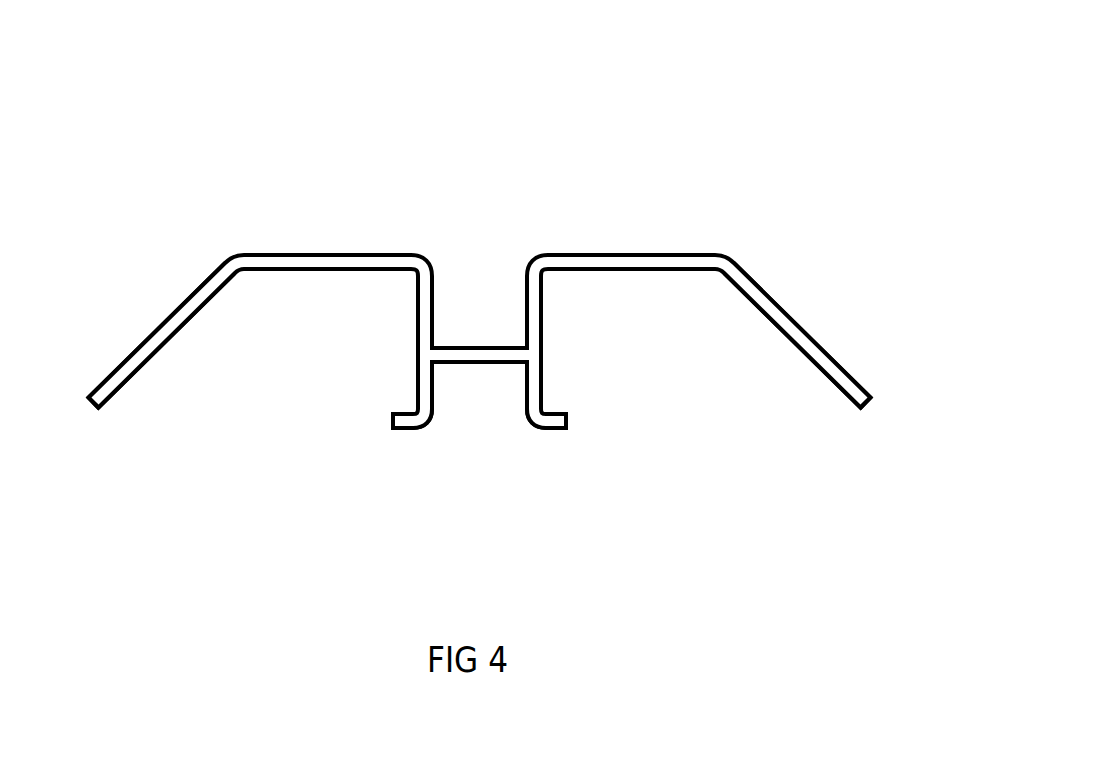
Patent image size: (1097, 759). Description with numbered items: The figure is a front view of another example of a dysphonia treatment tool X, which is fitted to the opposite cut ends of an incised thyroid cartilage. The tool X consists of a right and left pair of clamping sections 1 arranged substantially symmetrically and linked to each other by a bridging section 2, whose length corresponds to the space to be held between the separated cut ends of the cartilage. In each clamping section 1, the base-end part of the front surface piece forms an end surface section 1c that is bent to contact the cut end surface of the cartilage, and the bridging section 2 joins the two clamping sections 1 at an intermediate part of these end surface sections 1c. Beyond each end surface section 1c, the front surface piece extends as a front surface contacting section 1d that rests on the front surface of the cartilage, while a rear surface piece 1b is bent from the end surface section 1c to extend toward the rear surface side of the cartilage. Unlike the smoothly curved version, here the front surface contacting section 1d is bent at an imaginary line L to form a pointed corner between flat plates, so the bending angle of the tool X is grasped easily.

The dysphonia treatment tool X is at (501, 278).
The clamping section 1 is at (499, 326).
The bridging section 2 is at (487, 346).
The imaginary line L is at (234, 254).
The rear surface piece 1b is at (406, 432).
The end surface section 1c is at (417, 353).
The front surface contacting section 1d is at (177, 322).